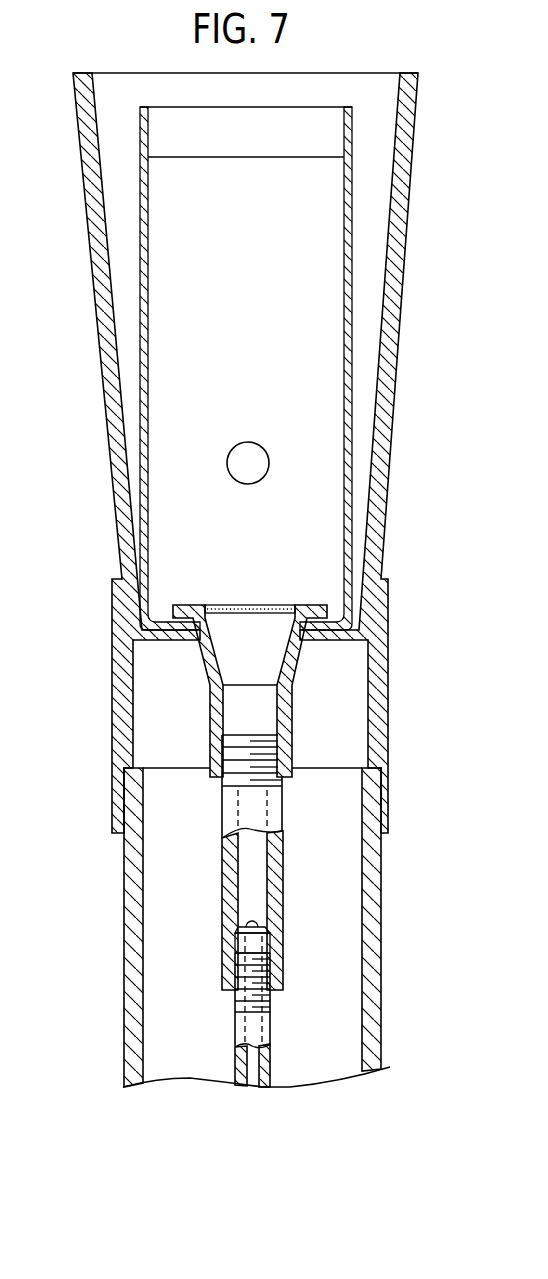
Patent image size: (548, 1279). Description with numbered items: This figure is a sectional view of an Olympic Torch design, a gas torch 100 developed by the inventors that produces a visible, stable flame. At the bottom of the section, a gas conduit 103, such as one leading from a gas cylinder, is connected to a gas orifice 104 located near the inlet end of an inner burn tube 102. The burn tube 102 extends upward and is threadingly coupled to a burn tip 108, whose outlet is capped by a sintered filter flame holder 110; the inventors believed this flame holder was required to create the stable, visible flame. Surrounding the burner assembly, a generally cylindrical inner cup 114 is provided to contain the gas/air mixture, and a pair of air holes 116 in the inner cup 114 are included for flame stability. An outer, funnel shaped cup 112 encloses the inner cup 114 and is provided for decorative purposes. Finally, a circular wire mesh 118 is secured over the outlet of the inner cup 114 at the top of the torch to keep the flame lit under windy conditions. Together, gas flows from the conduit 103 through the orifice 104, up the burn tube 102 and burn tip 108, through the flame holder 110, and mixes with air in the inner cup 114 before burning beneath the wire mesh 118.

The gas torch 100 is at (68, 842).
The inner burn tube 102 is at (284, 868).
The gas conduit 103 is at (235, 1022).
The gas orifice 104 is at (264, 938).
The burn tip 108 is at (292, 707).
The sintered filter flame holder 110 is at (254, 603).
The outer funnel shaped cup 112 is at (403, 278).
The inner cup 114 is at (353, 370).
The air holes 116 is at (250, 452).
The wire mesh 118 is at (288, 106).